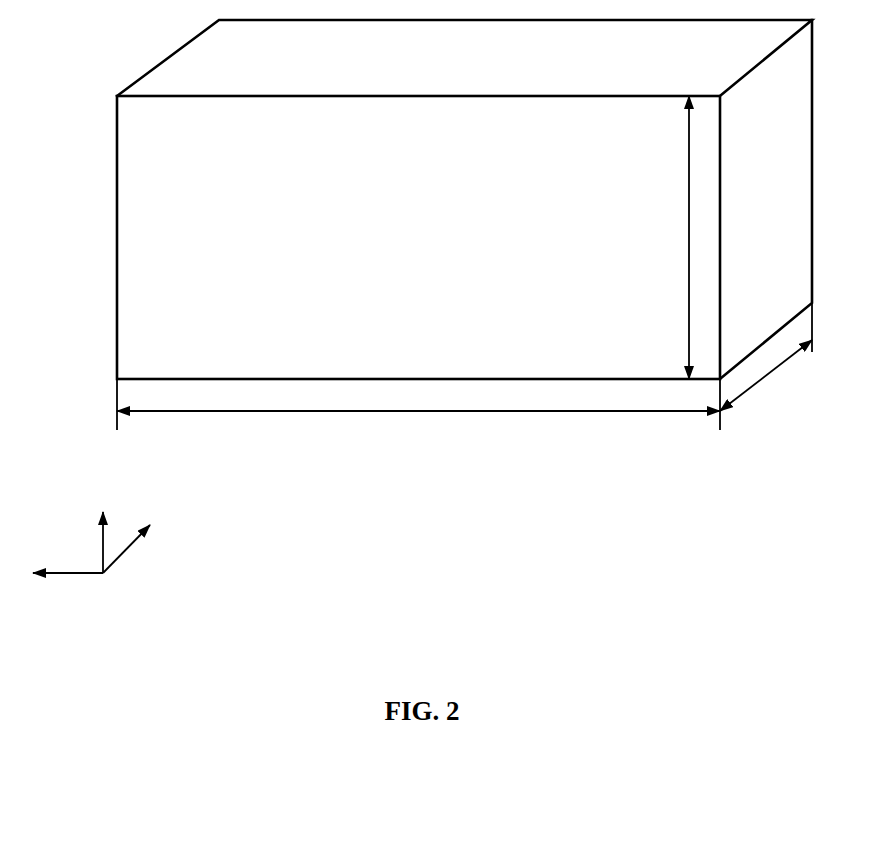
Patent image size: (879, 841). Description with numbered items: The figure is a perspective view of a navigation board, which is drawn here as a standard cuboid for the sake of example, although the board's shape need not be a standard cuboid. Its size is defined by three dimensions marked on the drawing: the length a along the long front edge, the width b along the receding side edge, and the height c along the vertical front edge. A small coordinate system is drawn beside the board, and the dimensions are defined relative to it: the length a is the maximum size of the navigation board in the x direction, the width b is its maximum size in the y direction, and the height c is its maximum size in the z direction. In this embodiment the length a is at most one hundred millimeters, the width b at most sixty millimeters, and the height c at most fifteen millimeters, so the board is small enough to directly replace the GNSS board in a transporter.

The length a is at (418, 397).
The width b is at (766, 375).
The height c is at (678, 237).
The x direction x is at (68, 559).
The y direction y is at (126, 537).
The z direction z is at (91, 536).